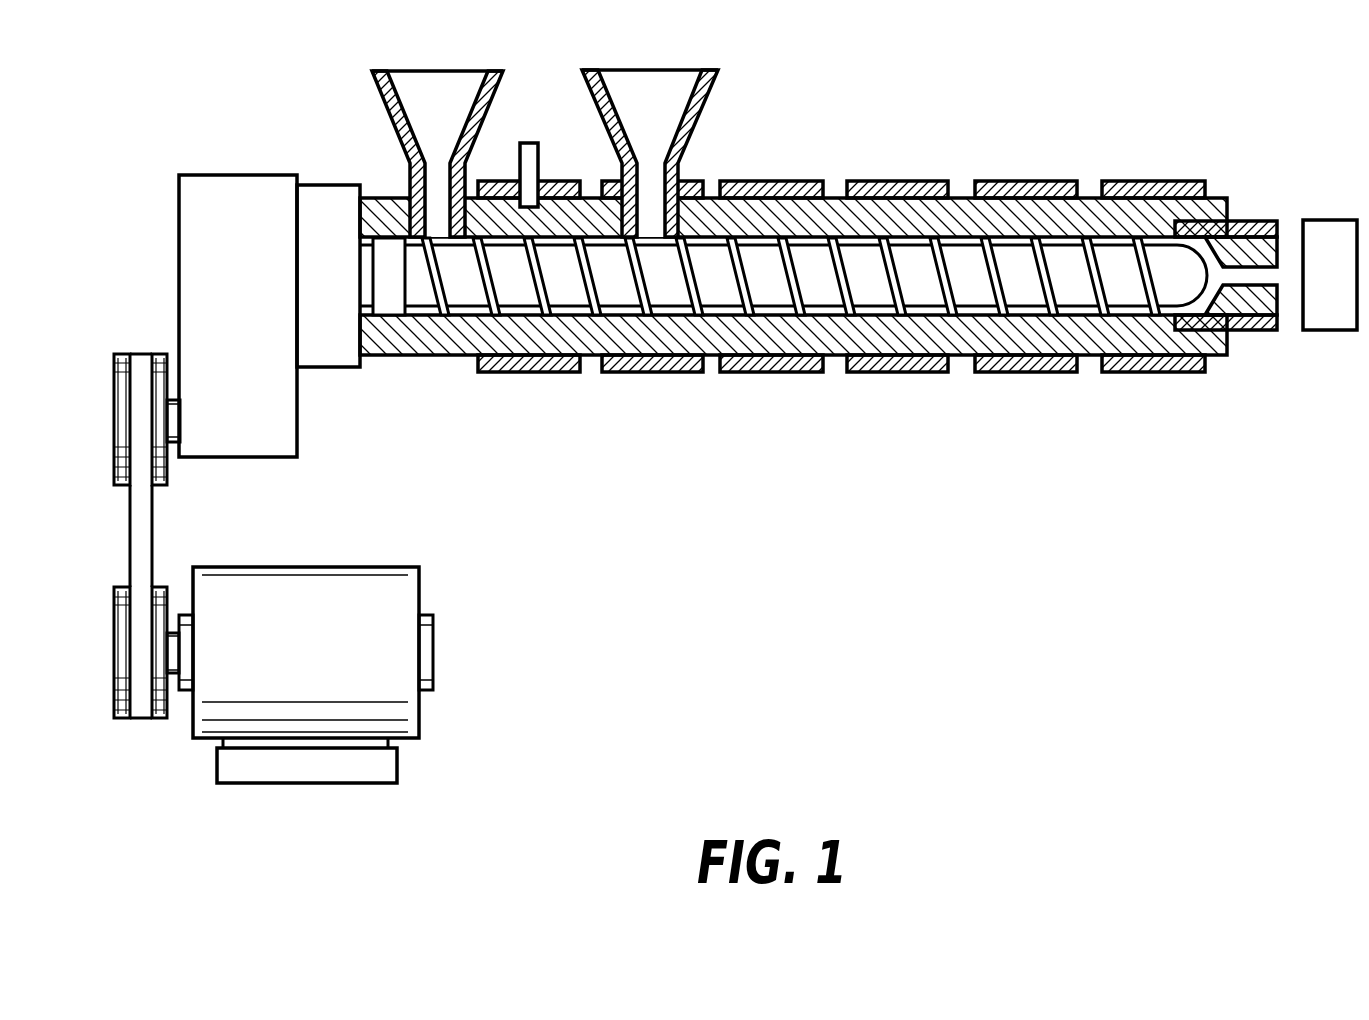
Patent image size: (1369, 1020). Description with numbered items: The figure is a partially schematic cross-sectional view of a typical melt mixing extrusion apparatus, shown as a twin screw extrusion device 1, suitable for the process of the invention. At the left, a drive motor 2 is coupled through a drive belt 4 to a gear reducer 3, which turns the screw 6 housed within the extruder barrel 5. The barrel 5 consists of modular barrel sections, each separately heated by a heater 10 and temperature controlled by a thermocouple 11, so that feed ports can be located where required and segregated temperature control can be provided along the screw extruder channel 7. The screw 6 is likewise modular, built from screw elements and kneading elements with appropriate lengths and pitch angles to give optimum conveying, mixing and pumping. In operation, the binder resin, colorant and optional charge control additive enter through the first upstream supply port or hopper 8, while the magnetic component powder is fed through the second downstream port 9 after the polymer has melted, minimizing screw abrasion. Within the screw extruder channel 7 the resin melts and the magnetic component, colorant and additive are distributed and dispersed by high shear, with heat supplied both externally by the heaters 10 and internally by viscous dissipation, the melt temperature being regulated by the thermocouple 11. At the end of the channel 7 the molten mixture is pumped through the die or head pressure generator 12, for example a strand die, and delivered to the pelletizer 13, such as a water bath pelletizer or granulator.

The twin screw extrusion device 1 is at (801, 231).
The drive motor 2 is at (300, 583).
The gear reducer 3 is at (235, 183).
The drive belt 4 is at (130, 505).
The extruder barrel 5 is at (418, 342).
The screw 6 is at (868, 283).
The screw extruder channel 7 is at (1025, 307).
The upstream supply port or hopper 8 is at (384, 133).
The downstream port 9 is at (722, 103).
The heater 10 is at (1143, 182).
The thermocouple 11 is at (525, 142).
The die or head pressure generator 12 is at (1255, 330).
The pelletizer 13 is at (1327, 330).